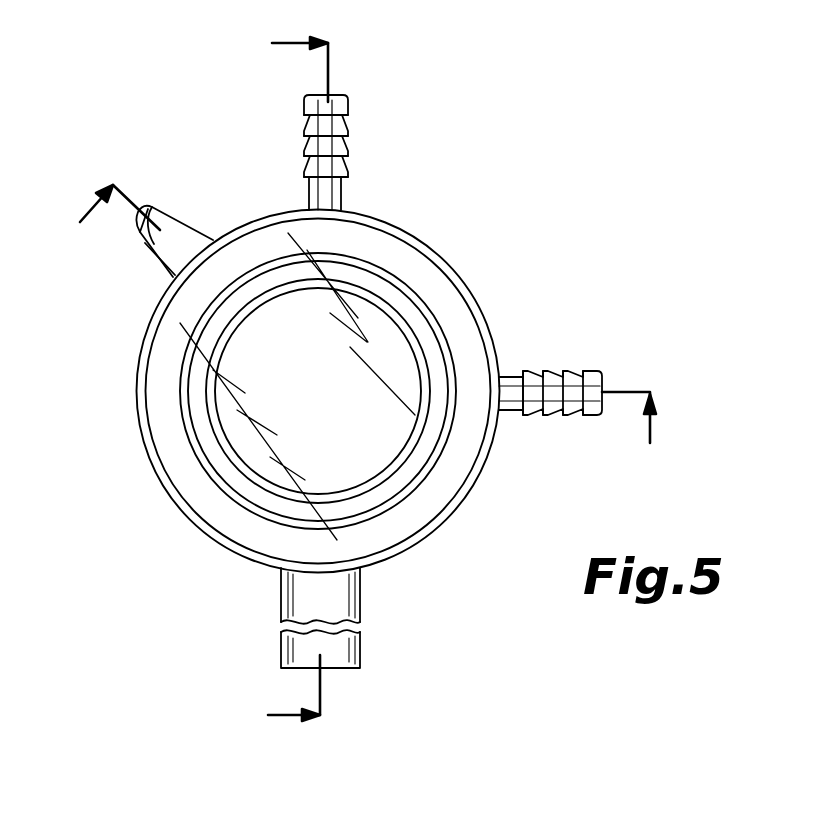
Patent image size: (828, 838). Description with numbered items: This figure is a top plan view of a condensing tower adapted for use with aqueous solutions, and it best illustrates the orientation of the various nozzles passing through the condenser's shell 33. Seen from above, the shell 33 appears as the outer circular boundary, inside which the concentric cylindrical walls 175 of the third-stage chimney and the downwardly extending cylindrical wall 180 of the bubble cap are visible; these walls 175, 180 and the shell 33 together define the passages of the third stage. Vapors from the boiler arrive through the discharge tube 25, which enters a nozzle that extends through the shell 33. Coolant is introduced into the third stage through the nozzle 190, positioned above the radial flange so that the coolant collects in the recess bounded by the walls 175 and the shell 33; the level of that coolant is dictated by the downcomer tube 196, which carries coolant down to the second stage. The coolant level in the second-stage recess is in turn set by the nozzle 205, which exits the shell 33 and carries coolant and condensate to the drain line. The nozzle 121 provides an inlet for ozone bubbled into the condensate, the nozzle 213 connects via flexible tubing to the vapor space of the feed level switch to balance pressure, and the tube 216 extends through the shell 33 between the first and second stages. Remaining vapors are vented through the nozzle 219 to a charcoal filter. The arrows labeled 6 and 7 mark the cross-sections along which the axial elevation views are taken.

The shell 33 is at (445, 258).
The cylindrical wall 180 is at (378, 257).
The cylindrical walls 175 is at (422, 344).
The nozzle 205 is at (348, 120).
The nozzle 219 is at (412, 146).
The nozzle 190 is at (575, 373).
The tube 216 is at (622, 358).
The downcomer tube 196 is at (184, 220).
The nozzle 121 is at (137, 226).
The nozzle 213 is at (157, 261).
The discharge tube 25 is at (361, 603).
The section line 7- 7 is at (322, 381).
The section line 6- 6 is at (368, 291).